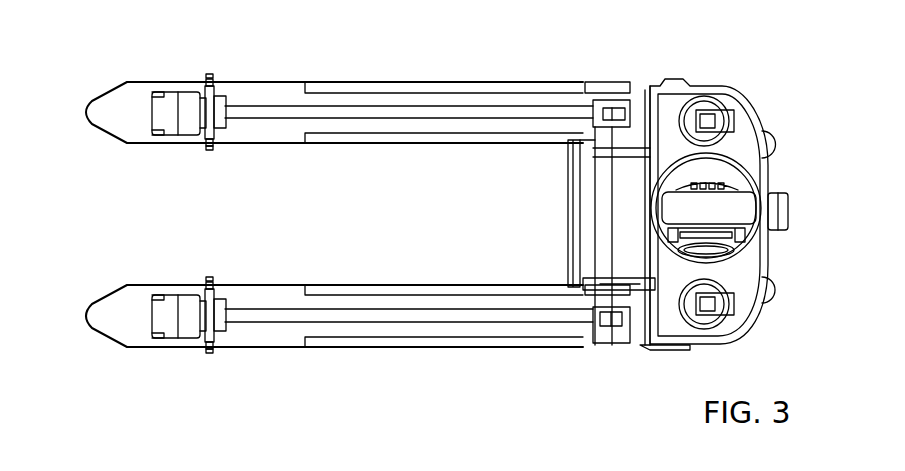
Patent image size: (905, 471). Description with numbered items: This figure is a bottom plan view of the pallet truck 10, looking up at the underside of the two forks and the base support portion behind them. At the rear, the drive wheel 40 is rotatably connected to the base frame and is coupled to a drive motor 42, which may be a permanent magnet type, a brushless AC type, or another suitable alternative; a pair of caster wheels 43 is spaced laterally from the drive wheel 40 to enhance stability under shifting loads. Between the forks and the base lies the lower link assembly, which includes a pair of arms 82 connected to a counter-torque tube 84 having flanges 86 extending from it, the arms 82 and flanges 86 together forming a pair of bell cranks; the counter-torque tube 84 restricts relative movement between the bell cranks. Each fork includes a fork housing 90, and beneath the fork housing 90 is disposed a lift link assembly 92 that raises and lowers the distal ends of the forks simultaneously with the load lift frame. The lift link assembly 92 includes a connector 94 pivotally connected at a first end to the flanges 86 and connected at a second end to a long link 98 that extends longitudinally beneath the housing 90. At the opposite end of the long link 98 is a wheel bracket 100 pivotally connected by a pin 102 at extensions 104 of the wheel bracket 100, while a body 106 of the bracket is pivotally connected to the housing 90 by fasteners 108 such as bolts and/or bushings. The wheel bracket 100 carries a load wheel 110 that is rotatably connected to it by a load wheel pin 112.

The pallet truck 10 is at (663, 43).
The drive wheel 40 is at (740, 210).
The drive motor 42 is at (715, 238).
The caster wheels 43 is at (720, 124).
The arms 82 is at (586, 291).
The counter-torque tube 84 is at (600, 240).
The flanges 86 is at (634, 346).
The fork housing 90 is at (378, 349).
The lift link assembly 92 is at (441, 333).
The connector 94 is at (598, 346).
The long link 98 is at (273, 317).
The wheel bracket 100 is at (186, 296).
The pin 102 is at (218, 340).
The extensions 104 is at (226, 306).
The body 106 is at (207, 291).
The fasteners 108 is at (210, 350).
The load wheel 110 is at (162, 321).
The load wheel pin 112 is at (162, 291).